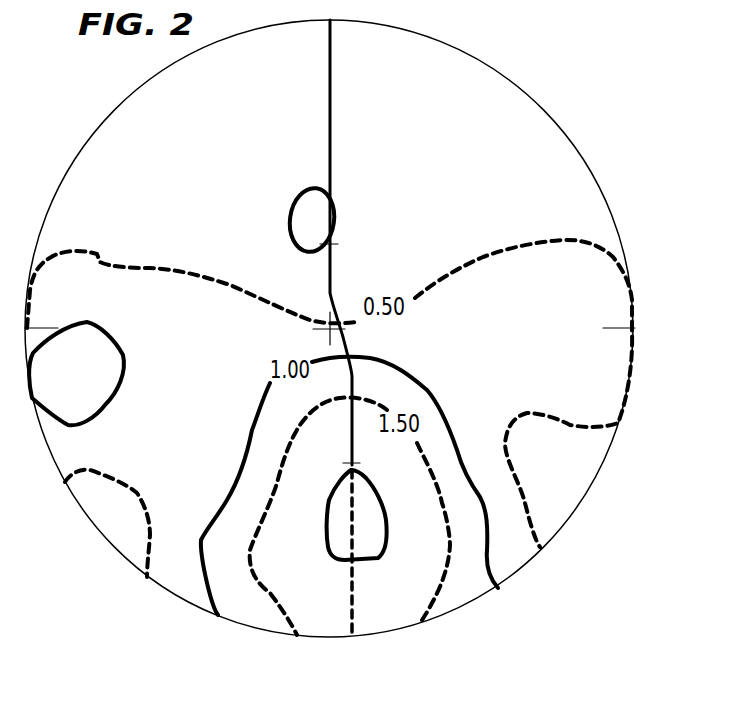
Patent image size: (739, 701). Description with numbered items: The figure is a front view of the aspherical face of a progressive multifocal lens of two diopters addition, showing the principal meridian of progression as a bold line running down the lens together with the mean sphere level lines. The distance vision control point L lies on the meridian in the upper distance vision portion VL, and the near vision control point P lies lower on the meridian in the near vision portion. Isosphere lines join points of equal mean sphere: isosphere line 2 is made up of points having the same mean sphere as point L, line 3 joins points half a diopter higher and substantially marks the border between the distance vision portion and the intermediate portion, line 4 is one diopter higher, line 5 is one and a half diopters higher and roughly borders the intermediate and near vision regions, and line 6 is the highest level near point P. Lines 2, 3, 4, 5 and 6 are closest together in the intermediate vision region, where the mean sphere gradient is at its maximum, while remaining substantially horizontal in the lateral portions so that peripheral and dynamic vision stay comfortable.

The distance vision portion VL is at (128, 133).
The isosphere line 2 is at (293, 203).
The distance vision control point L is at (338, 243).
The isosphere line 3 is at (99, 255).
The isosphere line 4 is at (257, 408).
The isosphere line 5 is at (262, 590).
The near vision control point P is at (364, 462).
The isosphere line 6 is at (377, 558).